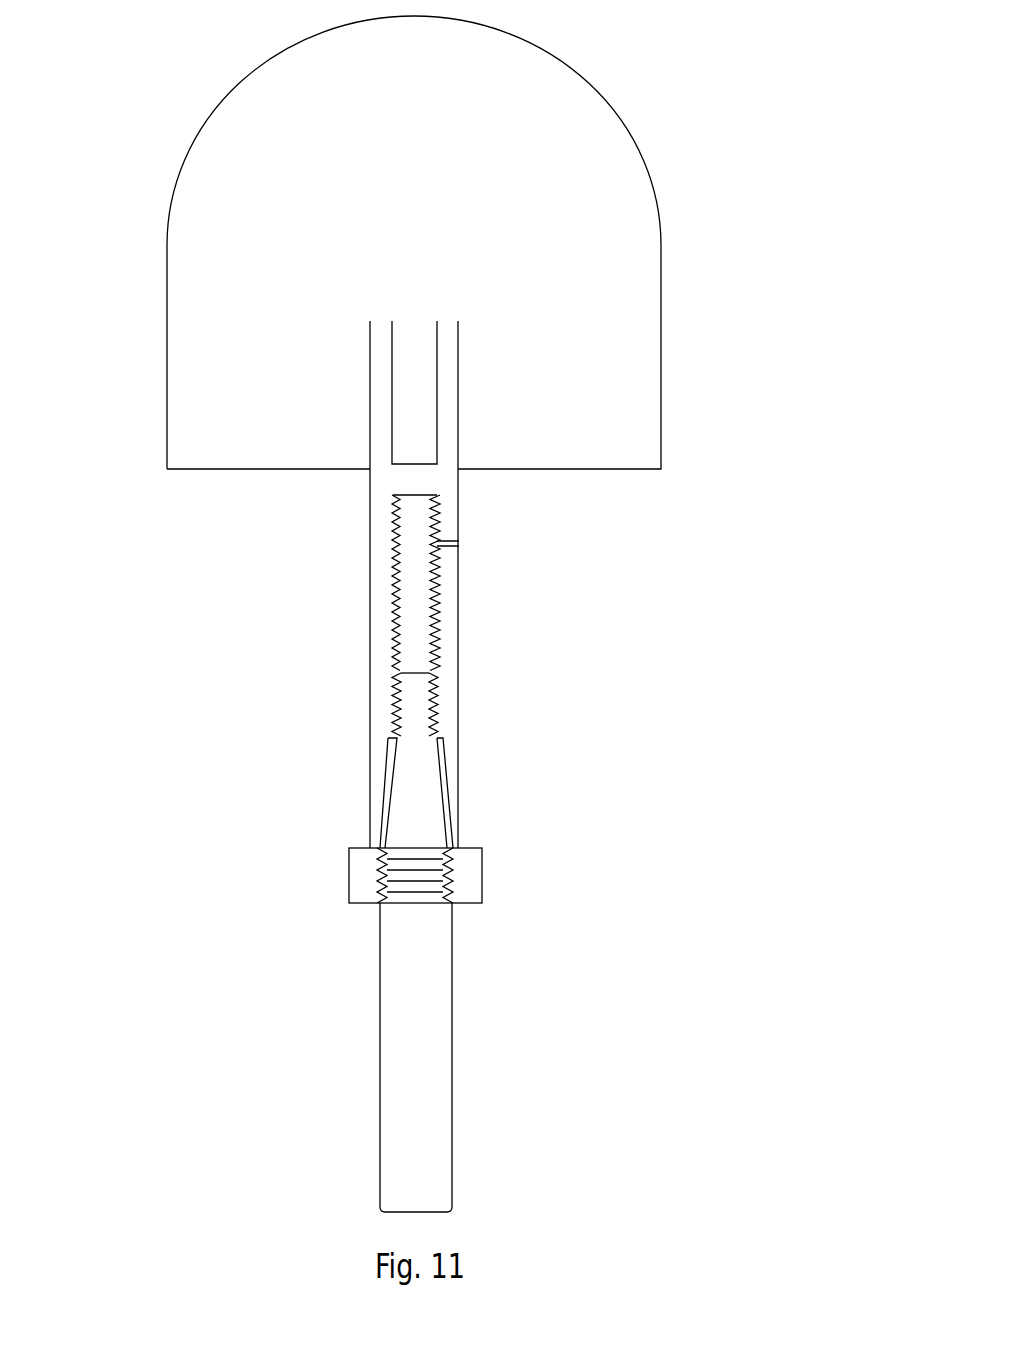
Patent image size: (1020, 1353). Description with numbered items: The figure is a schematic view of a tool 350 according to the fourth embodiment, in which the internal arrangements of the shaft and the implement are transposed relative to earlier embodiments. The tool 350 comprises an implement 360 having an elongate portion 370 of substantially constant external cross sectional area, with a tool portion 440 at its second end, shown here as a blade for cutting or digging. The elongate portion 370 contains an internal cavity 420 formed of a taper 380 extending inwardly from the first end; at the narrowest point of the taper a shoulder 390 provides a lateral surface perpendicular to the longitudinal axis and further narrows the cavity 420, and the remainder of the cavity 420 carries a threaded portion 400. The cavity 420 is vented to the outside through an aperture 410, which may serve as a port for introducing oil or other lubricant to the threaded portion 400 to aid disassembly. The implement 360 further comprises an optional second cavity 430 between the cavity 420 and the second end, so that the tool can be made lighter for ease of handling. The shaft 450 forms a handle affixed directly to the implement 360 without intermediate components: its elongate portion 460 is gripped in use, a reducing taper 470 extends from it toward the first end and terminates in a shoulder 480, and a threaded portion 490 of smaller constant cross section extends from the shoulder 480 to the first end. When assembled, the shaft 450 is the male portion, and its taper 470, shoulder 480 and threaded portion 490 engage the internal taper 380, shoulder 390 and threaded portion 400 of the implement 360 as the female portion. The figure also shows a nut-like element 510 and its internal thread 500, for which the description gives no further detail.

The tool 350 is at (499, 584).
The implement 360 is at (435, 263).
The elongate portion 370 is at (370, 580).
The taper 380 is at (447, 770).
The shoulder 390 is at (394, 698).
The threaded portion 400 is at (415, 583).
The aperture 410 is at (440, 541).
The internal cavity 420 is at (415, 608).
The second cavity 430 is at (408, 403).
The tool portion 440 is at (207, 314).
The shaft 450 is at (431, 999).
The elongate portion 460 is at (402, 1054).
The reducing taper 470 is at (403, 807).
The shoulder 480 is at (387, 757).
The threaded portion 490 is at (410, 693).
The nut internal thread 500 is at (430, 878).
The nut 510 is at (456, 844).